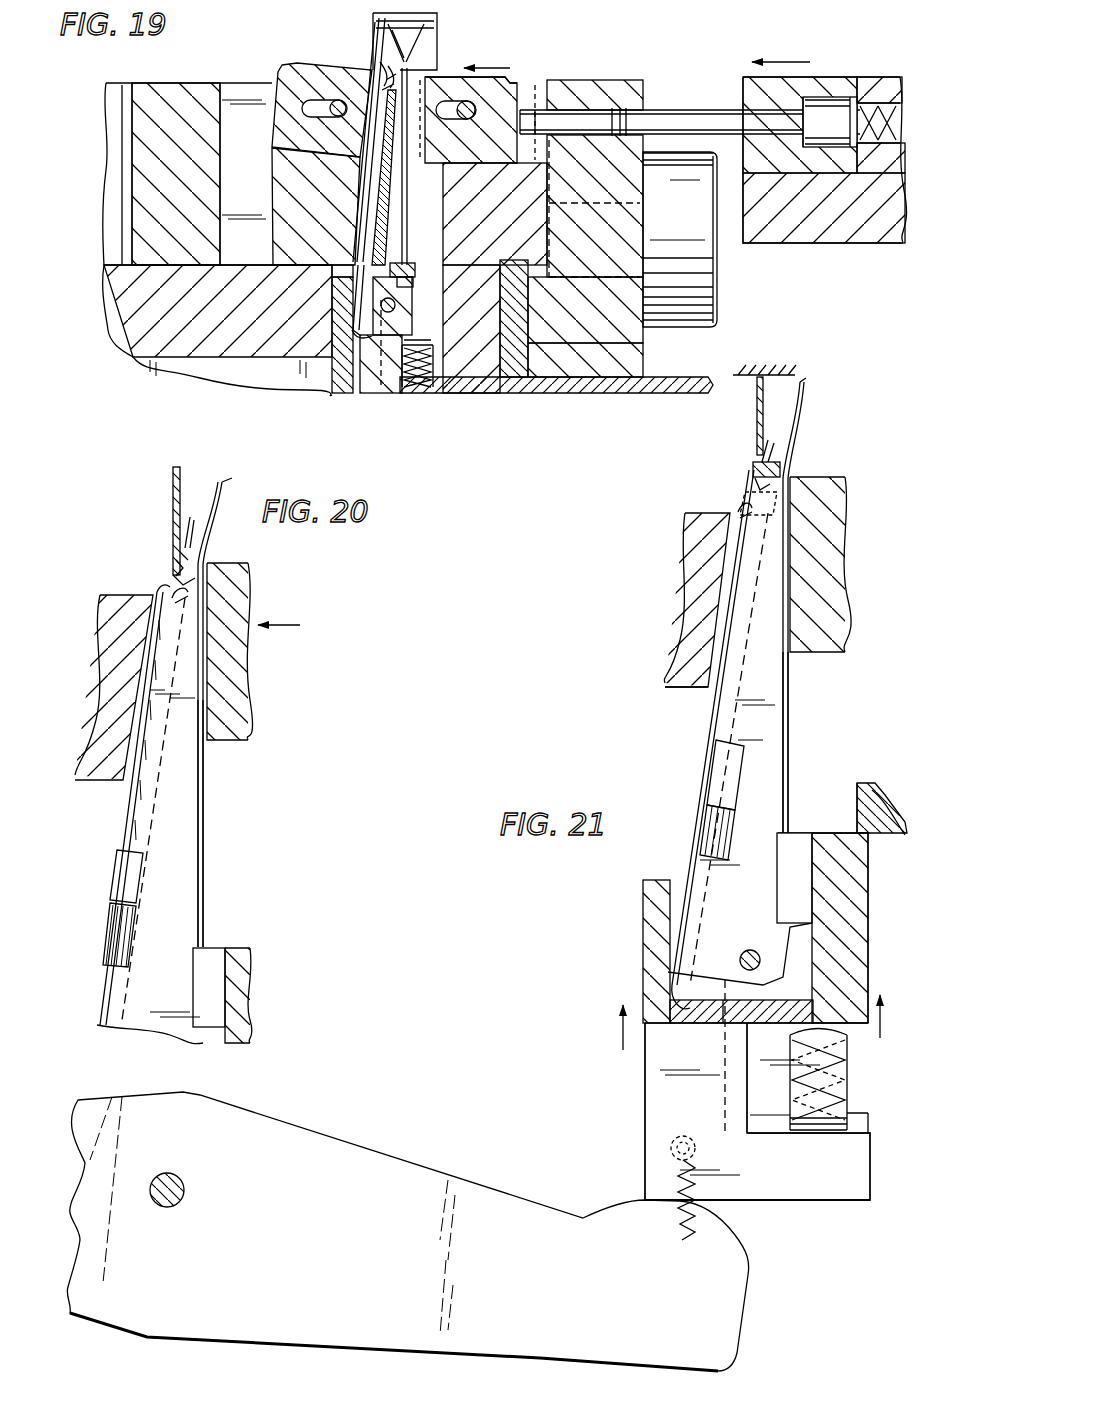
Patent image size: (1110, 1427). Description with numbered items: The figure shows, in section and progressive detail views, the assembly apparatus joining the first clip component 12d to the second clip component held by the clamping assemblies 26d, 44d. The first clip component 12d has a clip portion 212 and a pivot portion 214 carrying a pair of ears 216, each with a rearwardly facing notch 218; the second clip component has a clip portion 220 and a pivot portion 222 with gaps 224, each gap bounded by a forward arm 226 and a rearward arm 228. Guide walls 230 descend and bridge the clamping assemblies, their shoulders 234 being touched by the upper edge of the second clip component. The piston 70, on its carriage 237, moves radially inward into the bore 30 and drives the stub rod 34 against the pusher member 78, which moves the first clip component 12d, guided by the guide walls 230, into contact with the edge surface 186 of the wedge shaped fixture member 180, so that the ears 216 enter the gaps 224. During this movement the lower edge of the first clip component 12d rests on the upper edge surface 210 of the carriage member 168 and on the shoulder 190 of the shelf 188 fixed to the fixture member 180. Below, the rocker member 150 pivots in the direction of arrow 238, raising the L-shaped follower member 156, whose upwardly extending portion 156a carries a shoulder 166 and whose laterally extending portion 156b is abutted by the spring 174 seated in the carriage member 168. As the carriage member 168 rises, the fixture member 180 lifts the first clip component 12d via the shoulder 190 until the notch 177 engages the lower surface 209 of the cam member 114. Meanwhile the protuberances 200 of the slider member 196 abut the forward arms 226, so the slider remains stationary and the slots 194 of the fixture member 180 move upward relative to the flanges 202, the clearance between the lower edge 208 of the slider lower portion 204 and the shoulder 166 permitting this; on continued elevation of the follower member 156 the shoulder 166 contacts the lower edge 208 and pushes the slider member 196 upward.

In FIG. 19, the first clip component 12d is at (377, 28).
In FIG. 20, the first clip component 12d is at (222, 482).
In FIG. 21, the first clip component 12d is at (804, 400).
In FIG. 19, the ears 216 is at (380, 76).
In FIG. 20, the ears 216 is at (173, 567).
In FIG. 21, the ears 216 is at (755, 468).
In FIG. 19, the clamping assembly 44d is at (280, 66).
In FIG. 21, the clamping assembly 44d is at (686, 683).
In FIG. 19, the guide walls 230 is at (432, 36).
In FIG. 19, the gaps 224 is at (406, 70).
In FIG. 20, the gaps 224 is at (173, 560).
In FIG. 21, the gaps 224 is at (768, 493).
In FIG. 19, the clamping assembly 26d is at (504, 76).
In FIG. 19, the pusher member 78 is at (500, 98).
In FIG. 19, the bore 30 is at (610, 108).
In FIG. 19, the stub rod 34 is at (621, 118).
In FIG. 19, the piston 70 is at (712, 122).
In FIG. 19, the carriage 237 is at (832, 74).
In FIG. 19, the slider member 196 is at (368, 200).
In FIG. 21, the slider member 196 is at (722, 720).
In FIG. 19, the edge surface 186 is at (408, 188).
In FIG. 21, the edge surface 186 is at (792, 724).
In FIG. 19, the fixture member 180 is at (390, 213).
In FIG. 21, the fixture member 180 is at (778, 683).
In FIG. 19, the shoulder 190 is at (399, 265).
In FIG. 20, the shoulder 190 is at (210, 948).
In FIG. 21, the shoulder 190 is at (800, 830).
In FIG. 19, the upper edge surface 210 is at (437, 268).
In FIG. 20, the upper edge surface 210 is at (237, 952).
In FIG. 21, the upper edge surface 210 is at (810, 833).
In FIG. 19, the notch 177 is at (445, 283).
In FIG. 21, the notch 177 is at (880, 833).
In FIG. 19, the shelf 188 is at (444, 320).
In FIG. 21, the shelf 188 is at (790, 893).
In FIG. 19, the lower portion 204 is at (386, 305).
In FIG. 21, the lower portion 204 is at (667, 968).
In FIG. 19, the lower edge 208 is at (365, 335).
In FIG. 21, the lower edge 208 is at (668, 1003).
In FIG. 19, the shoulder 166 is at (367, 391).
In FIG. 21, the shoulder 166 is at (730, 1010).
In FIG. 19, the carriage member 168 is at (437, 258).
In FIG. 21, the carriage member 168 is at (866, 947).
In FIG. 20, the rearward arms 228 is at (180, 548).
In FIG. 21, the rearward arms 228 is at (760, 462).
In FIG. 20, the pivot portion 222 is at (170, 580).
In FIG. 20, the pivot portion 214 is at (212, 533).
In FIG. 20, the notch 218 is at (195, 560).
In FIG. 21, the notch 218 is at (780, 460).
In FIG. 20, the forward arms 226 is at (187, 600).
In FIG. 21, the forward arms 226 is at (745, 510).
In FIG. 20, the clip portion 220 is at (140, 850).
In FIG. 20, the flanges 202 is at (118, 879).
In FIG. 21, the flanges 202 is at (715, 777).
In FIG. 20, the slots 194 is at (110, 940).
In FIG. 21, the slots 194 is at (702, 848).
In FIG. 20, the clip portion 212 is at (204, 828).
In FIG. 21, the shoulders 234 is at (785, 380).
In FIG. 21, the protuberances 200 is at (740, 525).
In FIG. 21, the cam member 114 is at (880, 822).
In FIG. 21, the lower surface 209 is at (882, 843).
In FIG. 21, the spring 174 is at (850, 1083).
In FIG. 21, the follower member 156 is at (640, 1113).
In FIG. 21, the upwardly extending portion 156a is at (660, 1130).
In FIG. 21, the laterally extending portion 156b is at (828, 1190).
In FIG. 21, the arrow 238 is at (670, 1236).
In FIG. 21, the rocker member 150 is at (318, 1133).